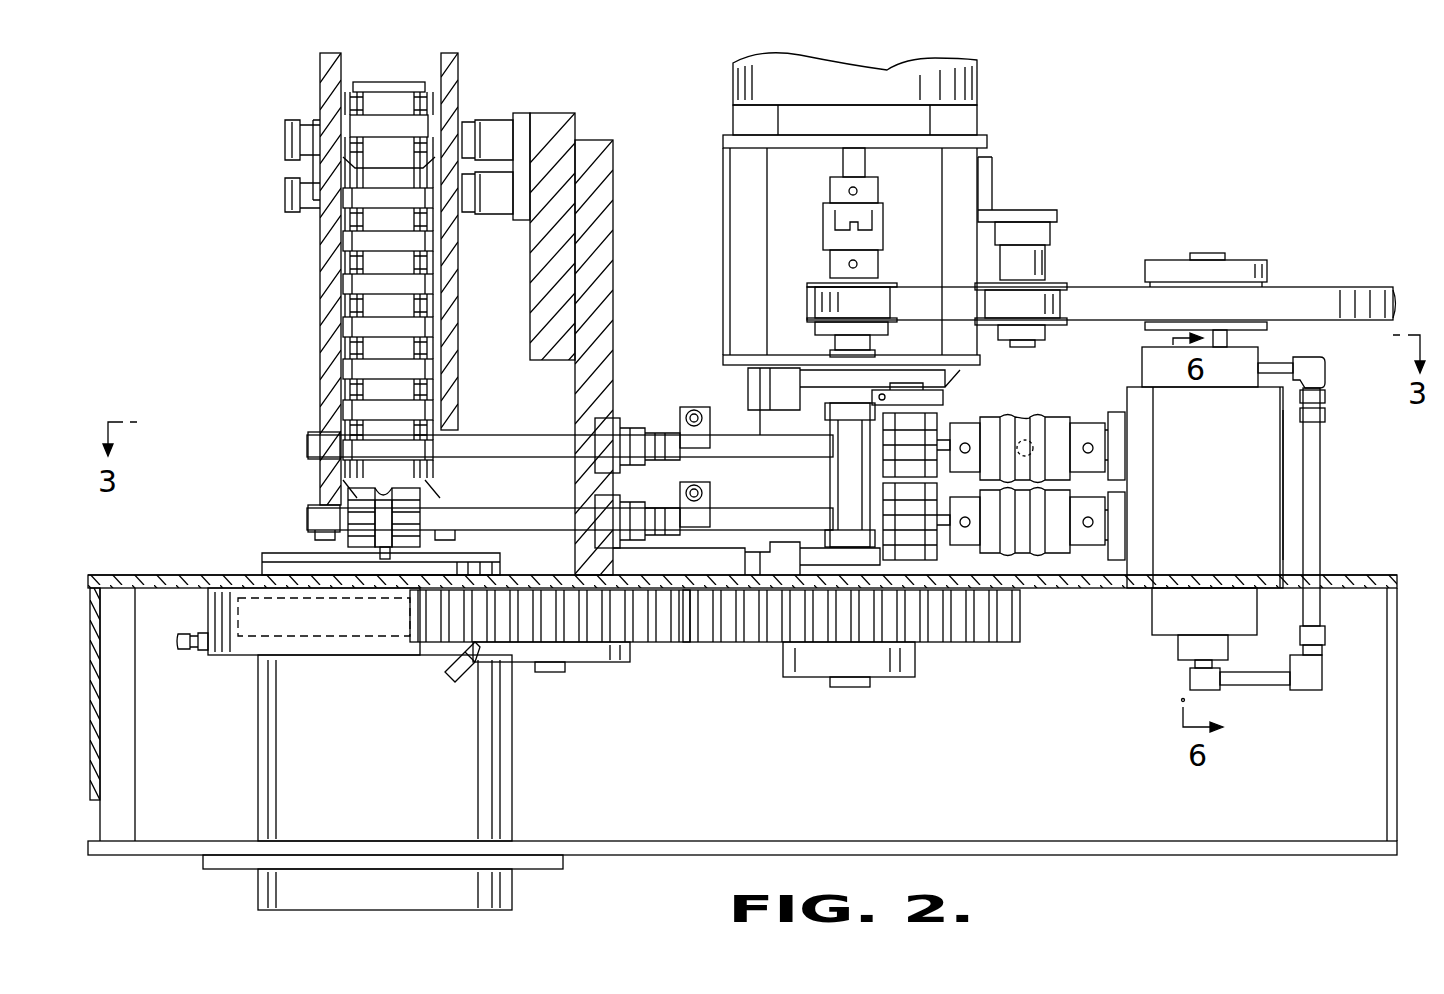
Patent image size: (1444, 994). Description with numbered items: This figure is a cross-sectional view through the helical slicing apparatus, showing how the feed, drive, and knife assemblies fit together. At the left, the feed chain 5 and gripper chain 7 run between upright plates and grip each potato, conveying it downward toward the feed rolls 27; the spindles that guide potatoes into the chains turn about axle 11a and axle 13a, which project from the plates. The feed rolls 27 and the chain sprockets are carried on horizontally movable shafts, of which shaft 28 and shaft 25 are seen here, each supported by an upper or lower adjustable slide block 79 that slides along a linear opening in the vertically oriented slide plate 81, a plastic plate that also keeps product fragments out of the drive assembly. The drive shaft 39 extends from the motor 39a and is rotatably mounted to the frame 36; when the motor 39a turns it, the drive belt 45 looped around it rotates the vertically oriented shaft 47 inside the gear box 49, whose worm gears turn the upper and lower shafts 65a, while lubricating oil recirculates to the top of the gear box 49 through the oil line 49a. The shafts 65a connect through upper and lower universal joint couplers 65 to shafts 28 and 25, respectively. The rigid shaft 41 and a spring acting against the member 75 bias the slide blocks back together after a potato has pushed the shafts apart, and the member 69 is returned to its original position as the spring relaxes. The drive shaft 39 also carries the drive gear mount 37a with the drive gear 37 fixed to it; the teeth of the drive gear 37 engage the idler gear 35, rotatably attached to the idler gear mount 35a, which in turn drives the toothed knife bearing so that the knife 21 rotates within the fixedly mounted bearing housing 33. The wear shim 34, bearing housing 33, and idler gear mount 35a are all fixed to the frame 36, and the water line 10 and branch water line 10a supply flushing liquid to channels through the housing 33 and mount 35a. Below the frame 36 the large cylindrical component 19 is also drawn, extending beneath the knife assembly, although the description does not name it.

The feed chain 5 is at (338, 245).
The gripper chain 7 is at (393, 82).
The axle 13a is at (285, 132).
The axle 11a is at (285, 190).
The slide plate 81 is at (613, 152).
The rotatable shaft 28 is at (515, 435).
The rotatable shaft 25 is at (506, 515).
The adjustable slide block 79 is at (613, 420).
The rigid shaft 41 is at (694, 410).
The drive shaft 39 is at (843, 158).
The motor 39a is at (980, 92).
The drive belt 45 is at (920, 287).
The vertically oriented shaft 47 is at (1213, 255).
The gear box 49 is at (1280, 546).
The oil line 49a is at (1270, 682).
The universal joint coupler 65 is at (1045, 420).
The shaft 65a is at (1110, 412).
The member 69 is at (945, 410).
The member 75 is at (755, 366).
The feed roll 27 is at (332, 503).
The knife 21 is at (285, 553).
The frame 36 is at (178, 575).
The bearing housing 33 is at (225, 657).
The wear shim 34 is at (250, 597).
The water line 10 is at (185, 650).
The water line 10a is at (455, 665).
The idler gear 35 is at (657, 645).
The idler gear mount 35a is at (592, 662).
The drive gear 37 is at (742, 645).
The drive gear mount 37a is at (803, 677).
The cylinder 19 is at (512, 795).